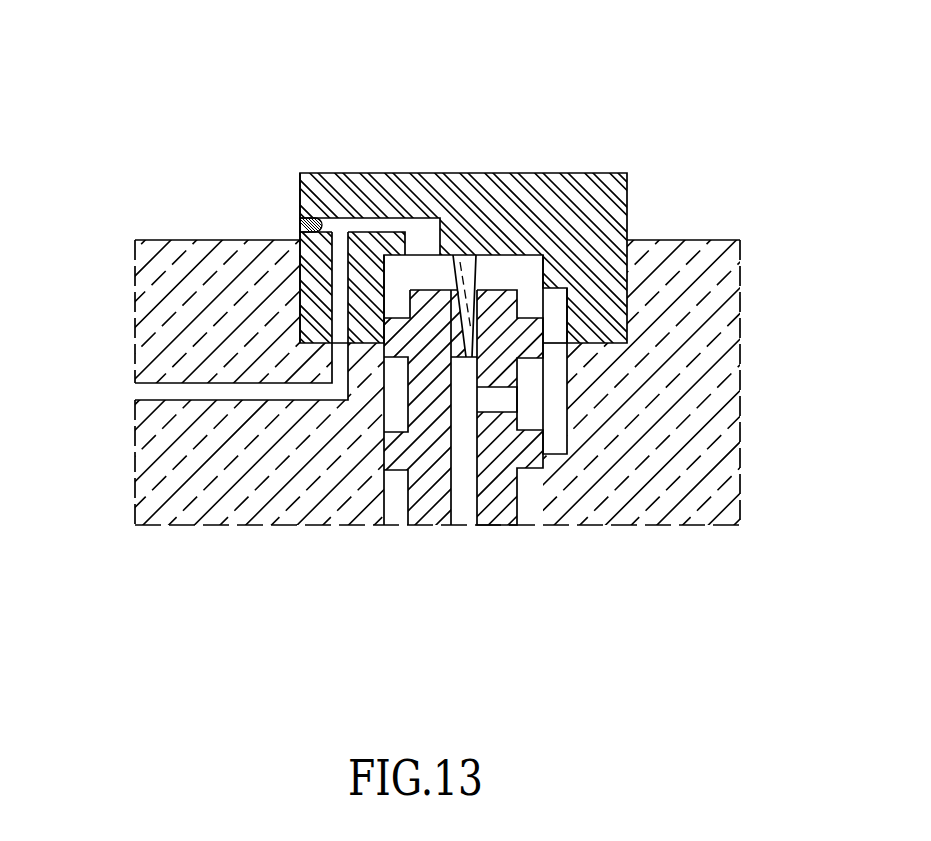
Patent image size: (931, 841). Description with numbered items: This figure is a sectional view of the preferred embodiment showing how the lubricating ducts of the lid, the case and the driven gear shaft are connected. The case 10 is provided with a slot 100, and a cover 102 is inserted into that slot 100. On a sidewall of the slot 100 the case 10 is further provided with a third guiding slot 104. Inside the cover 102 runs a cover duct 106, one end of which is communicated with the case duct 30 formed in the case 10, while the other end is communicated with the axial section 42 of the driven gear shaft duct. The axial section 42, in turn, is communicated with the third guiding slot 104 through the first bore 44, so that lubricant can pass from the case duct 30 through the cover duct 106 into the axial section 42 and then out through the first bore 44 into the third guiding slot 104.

The case 10 is at (227, 502).
The case duct 30 is at (195, 395).
The axial section 42 is at (467, 480).
The first bore 44 is at (497, 395).
The slot 100 is at (300, 287).
The cover 102 is at (558, 192).
The third guiding slot 104 is at (560, 393).
The cover duct 106 is at (368, 227).